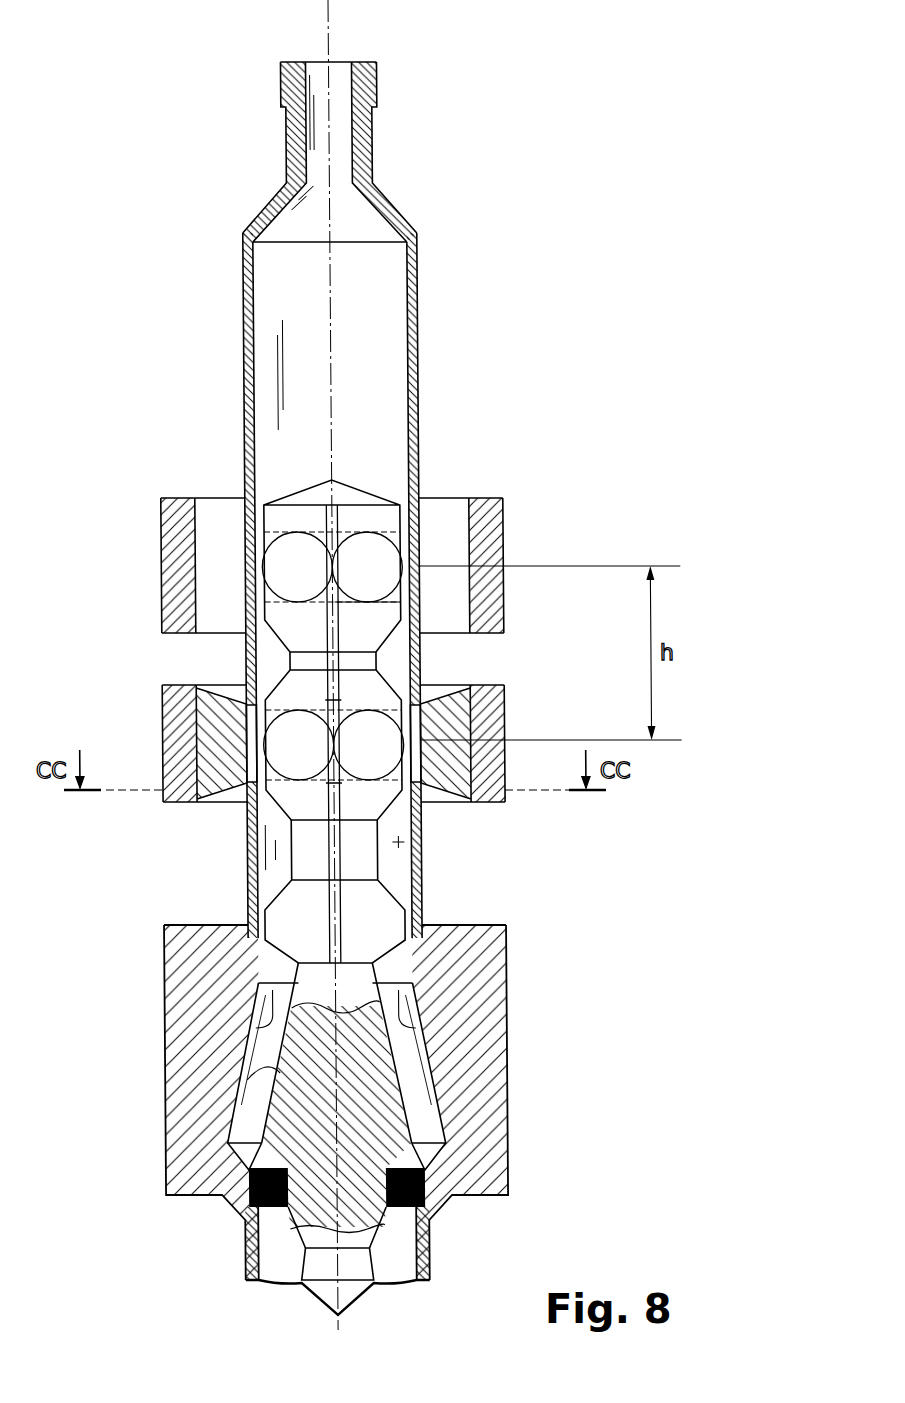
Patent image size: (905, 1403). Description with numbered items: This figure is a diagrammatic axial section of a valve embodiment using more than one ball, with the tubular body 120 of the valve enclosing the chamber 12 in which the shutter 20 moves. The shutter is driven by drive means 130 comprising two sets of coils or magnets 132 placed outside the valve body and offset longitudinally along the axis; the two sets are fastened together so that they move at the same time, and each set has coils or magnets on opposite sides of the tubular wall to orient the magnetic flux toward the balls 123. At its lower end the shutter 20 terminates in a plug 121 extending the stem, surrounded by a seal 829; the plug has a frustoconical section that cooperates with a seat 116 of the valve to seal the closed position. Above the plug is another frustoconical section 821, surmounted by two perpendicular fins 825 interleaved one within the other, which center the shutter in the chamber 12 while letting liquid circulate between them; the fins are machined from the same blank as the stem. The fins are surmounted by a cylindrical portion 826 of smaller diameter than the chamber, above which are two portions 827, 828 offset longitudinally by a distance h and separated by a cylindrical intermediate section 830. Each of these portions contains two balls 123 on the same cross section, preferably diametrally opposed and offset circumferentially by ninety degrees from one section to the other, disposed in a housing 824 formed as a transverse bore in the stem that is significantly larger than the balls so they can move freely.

The chamber 12 is at (368, 227).
The tubular housing 120 is at (415, 405).
The drive means 130 is at (506, 523).
The sets of coils or magnets 132 is at (206, 762).
The balls 123 is at (278, 550).
The ball-containing portion 828 is at (393, 532).
The housing 824 is at (389, 588).
The cylindrical intermediate section 830 is at (295, 653).
The ball-containing portion 827 is at (377, 733).
The shutter 20 is at (388, 842).
The cylindrical portion 826 is at (293, 858).
The fins 825 is at (254, 1018).
The frustoconical section 821 is at (229, 1087).
The seat 116 is at (436, 1165).
The seal 829 is at (238, 1190).
The plug 121 is at (303, 1262).